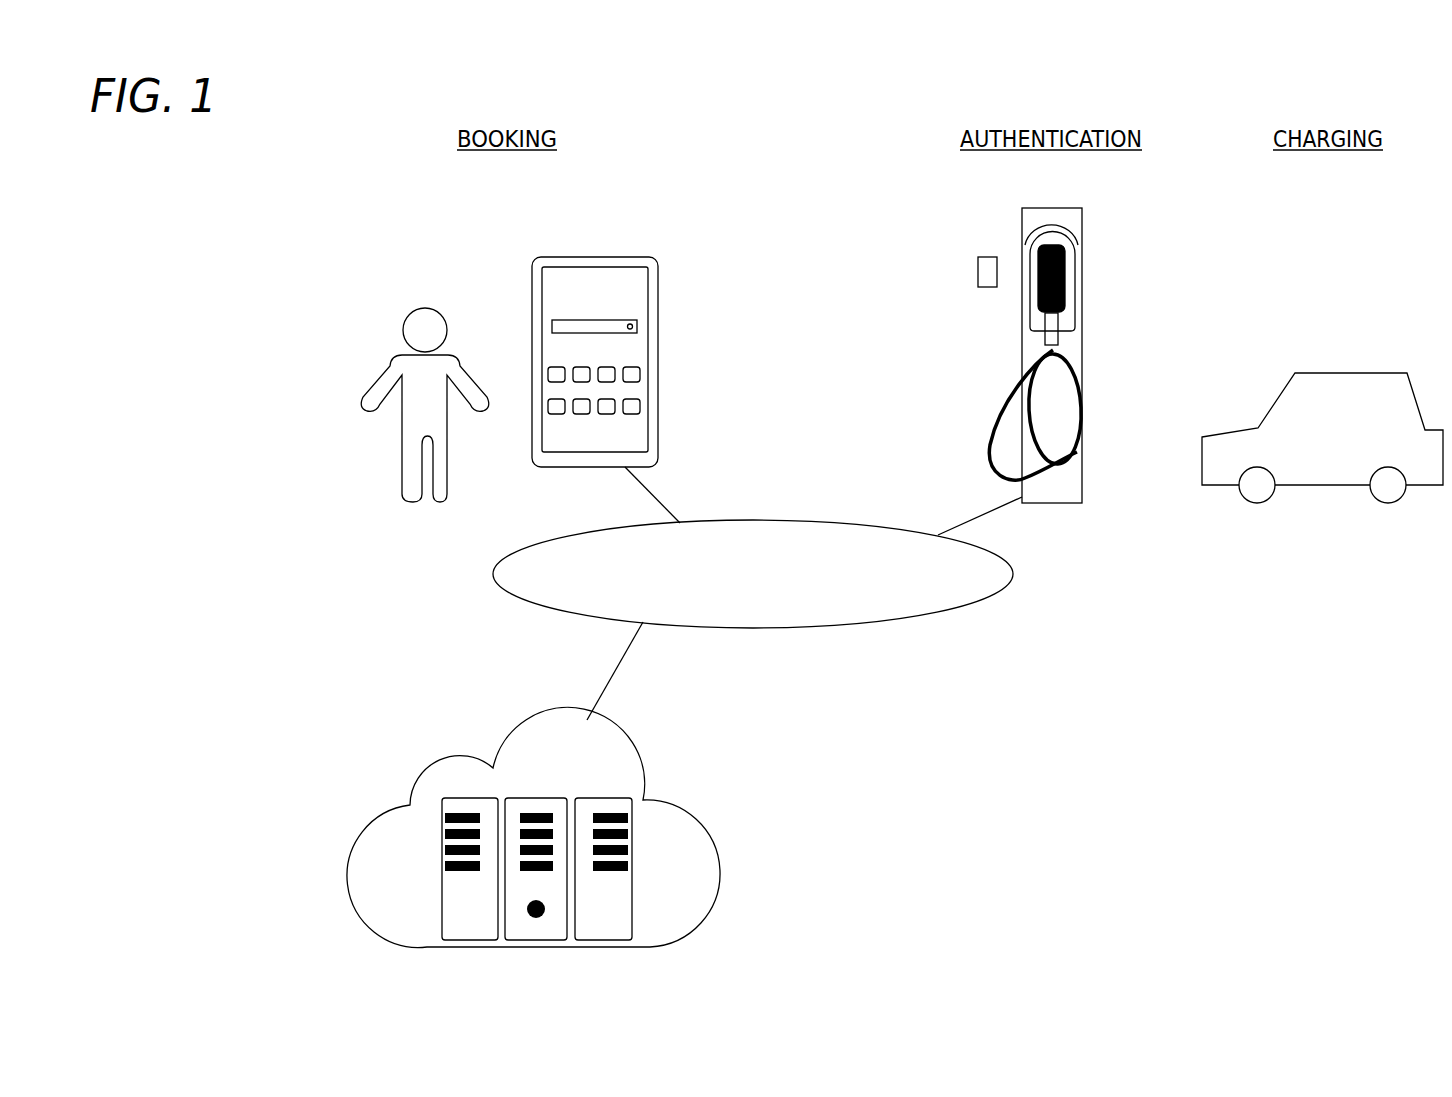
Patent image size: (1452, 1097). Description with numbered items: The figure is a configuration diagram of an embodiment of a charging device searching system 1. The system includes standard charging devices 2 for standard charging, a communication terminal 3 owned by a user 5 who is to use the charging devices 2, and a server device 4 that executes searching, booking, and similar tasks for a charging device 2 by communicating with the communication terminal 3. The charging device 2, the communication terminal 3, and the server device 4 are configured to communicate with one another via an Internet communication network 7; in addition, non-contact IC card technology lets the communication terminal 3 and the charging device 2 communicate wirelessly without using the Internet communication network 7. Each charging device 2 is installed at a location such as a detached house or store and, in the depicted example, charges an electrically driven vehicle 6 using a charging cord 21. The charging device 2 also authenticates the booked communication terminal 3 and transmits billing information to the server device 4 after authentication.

The charging device searching system 1 is at (290, 230).
The charging device 2 is at (1070, 334).
The communication terminal 3 is at (659, 342).
The server device 4 is at (628, 750).
The user 5 is at (396, 357).
The electrically driven vehicle 6 is at (1368, 373).
The Internet communication network 7 is at (901, 618).
The charging cord 21 is at (1082, 391).